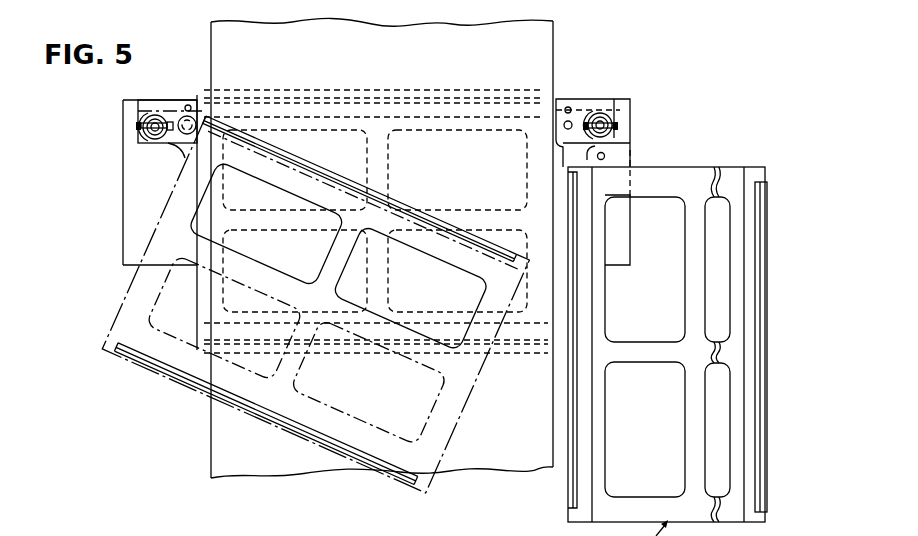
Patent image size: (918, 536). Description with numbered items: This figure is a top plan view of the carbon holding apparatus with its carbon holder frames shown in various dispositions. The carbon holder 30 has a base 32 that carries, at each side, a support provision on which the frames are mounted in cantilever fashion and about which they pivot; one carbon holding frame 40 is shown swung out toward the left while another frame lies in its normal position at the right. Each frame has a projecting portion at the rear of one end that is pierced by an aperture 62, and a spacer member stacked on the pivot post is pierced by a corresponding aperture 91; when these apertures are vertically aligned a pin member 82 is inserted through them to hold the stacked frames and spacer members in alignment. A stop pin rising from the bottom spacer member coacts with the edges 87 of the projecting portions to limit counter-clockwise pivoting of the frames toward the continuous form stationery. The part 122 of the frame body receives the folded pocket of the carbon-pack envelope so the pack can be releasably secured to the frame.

The carbon holder 30 is at (116, 237).
The base 32 is at (137, 192).
The tiltable panel frame 40 is at (121, 298).
The aperture 62 is at (602, 160).
The pin member 82 is at (184, 116).
The edges of projecting portions 87 is at (596, 147).
The apertures of spacer members 91 is at (564, 126).
The part of frame 122 is at (585, 464).